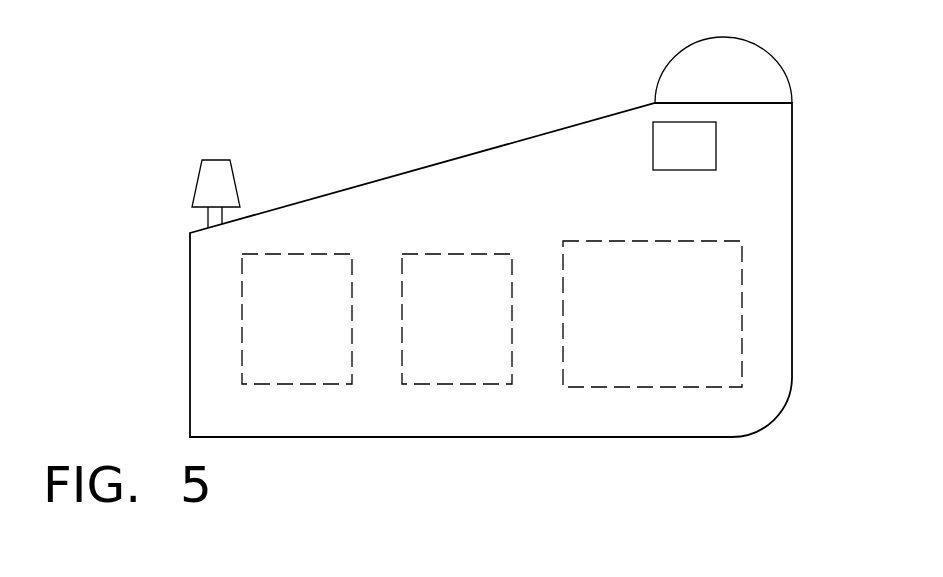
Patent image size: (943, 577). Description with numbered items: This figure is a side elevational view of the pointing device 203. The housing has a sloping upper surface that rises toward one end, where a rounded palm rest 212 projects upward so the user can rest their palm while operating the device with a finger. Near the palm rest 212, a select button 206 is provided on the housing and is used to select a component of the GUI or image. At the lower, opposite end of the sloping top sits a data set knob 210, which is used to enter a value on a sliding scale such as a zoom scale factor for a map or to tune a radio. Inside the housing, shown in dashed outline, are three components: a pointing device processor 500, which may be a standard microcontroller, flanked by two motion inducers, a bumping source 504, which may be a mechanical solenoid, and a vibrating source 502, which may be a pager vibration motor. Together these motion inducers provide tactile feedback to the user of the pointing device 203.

The pointing device 203 is at (409, 173).
The palm rest 212 is at (747, 41).
The select button 206 is at (653, 148).
The data set knob 210 is at (195, 187).
The bumping source 504 is at (323, 386).
The pointing device processor 500 is at (480, 386).
The vibrating source 502 is at (677, 389).